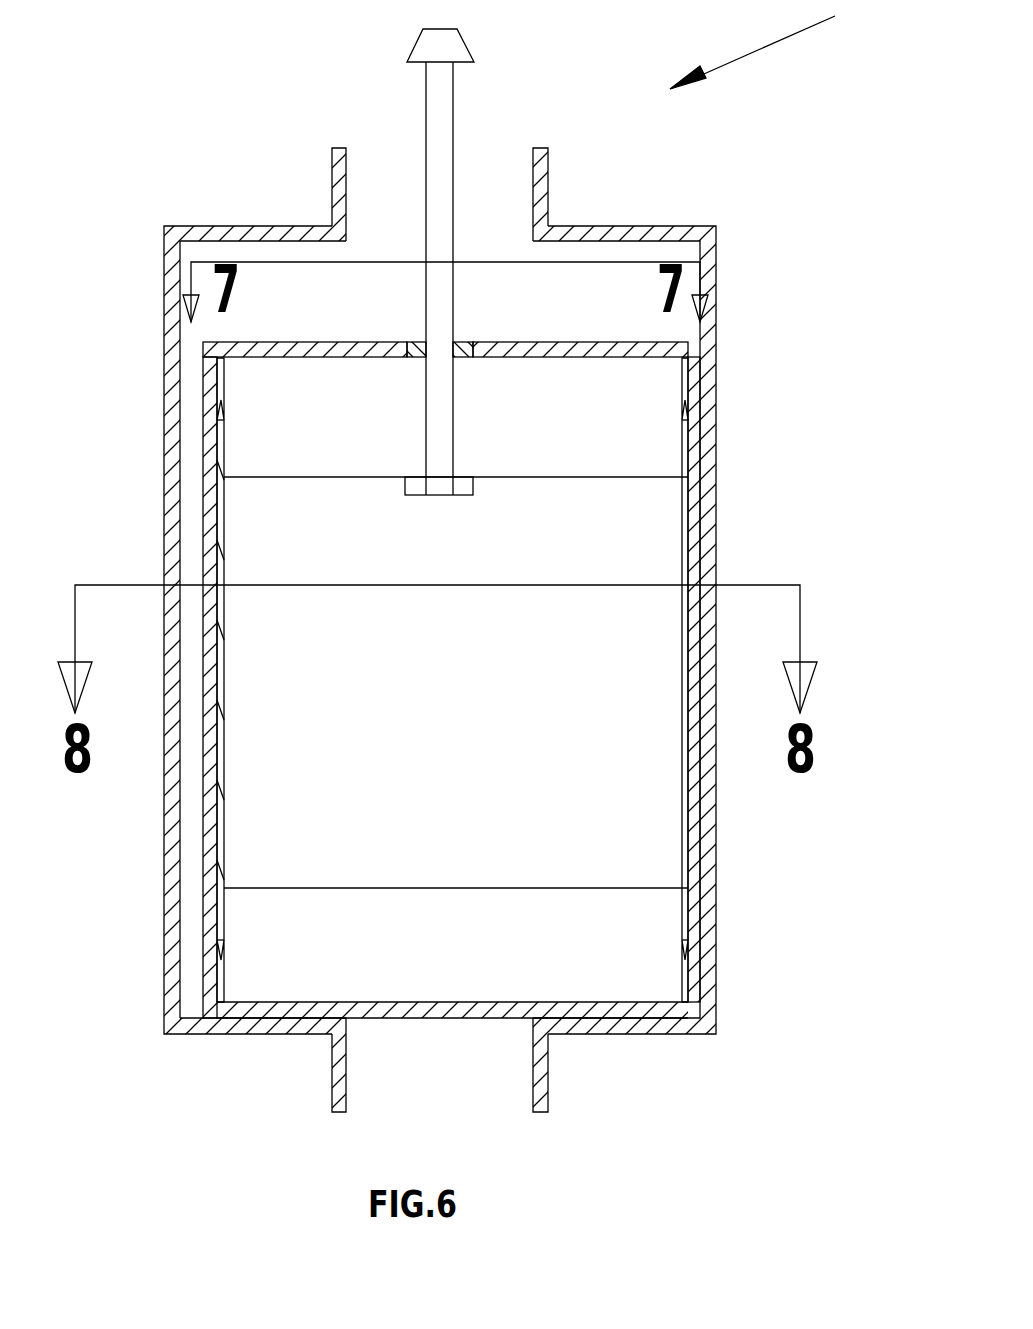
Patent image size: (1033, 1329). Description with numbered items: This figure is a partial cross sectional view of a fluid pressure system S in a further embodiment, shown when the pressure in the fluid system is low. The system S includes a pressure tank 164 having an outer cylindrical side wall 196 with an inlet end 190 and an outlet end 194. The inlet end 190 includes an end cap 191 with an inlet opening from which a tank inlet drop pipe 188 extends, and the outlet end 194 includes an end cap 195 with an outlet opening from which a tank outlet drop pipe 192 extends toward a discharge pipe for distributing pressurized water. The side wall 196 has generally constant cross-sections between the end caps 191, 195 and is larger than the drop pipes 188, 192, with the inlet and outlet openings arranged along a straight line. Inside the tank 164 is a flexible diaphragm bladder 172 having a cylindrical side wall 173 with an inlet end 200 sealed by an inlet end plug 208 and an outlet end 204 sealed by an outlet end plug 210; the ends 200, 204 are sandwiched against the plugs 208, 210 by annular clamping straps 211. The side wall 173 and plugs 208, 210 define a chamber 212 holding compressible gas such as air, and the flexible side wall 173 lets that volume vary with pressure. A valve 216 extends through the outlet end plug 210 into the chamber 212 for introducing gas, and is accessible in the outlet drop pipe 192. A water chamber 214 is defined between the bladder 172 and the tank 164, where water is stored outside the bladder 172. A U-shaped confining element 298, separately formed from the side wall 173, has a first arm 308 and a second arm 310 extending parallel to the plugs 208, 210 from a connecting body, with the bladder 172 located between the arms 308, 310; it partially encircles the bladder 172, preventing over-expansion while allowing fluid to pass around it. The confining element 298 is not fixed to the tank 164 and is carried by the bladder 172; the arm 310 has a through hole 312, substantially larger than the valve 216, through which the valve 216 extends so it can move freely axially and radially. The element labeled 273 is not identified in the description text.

The fluid pressure system S is at (763, 44).
The valve 216 is at (437, 97).
The end cap 195 is at (222, 229).
The tank outlet drop pipe 192 is at (542, 175).
The through hole 312 is at (480, 340).
The second arm 310 is at (320, 344).
The outlet end 194 is at (708, 270).
The pressure tank 164 is at (708, 393).
The outlet end 204 is at (667, 468).
The outer cylindrical side wall 196 is at (708, 523).
The annular clamping straps 211 is at (218, 390).
The outlet end plug 210 is at (247, 465).
The water chamber 214 is at (192, 518).
The chamber 212 is at (485, 713).
The confining element 298 is at (213, 853).
The seal 273 is at (212, 905).
The cylindrical side wall 173 is at (705, 862).
The inlet end 200 is at (712, 935).
The inlet end 190 is at (712, 985).
The flexible diaphragm bladder 172 is at (257, 973).
The first arm 308 is at (413, 1015).
The inlet end plug 208 is at (463, 972).
The tank inlet drop pipe 188 is at (550, 1073).
The end cap 191 is at (632, 1033).